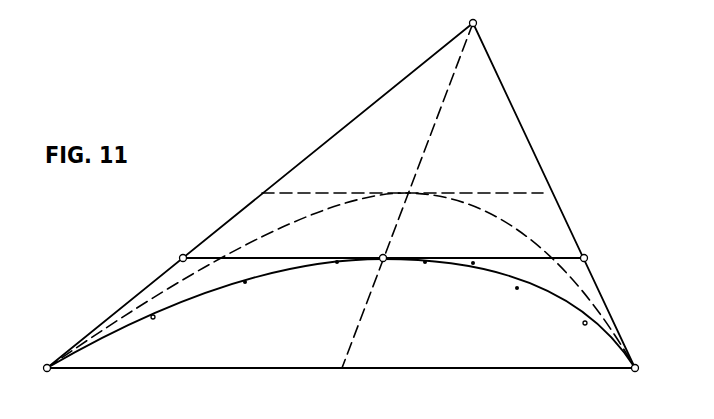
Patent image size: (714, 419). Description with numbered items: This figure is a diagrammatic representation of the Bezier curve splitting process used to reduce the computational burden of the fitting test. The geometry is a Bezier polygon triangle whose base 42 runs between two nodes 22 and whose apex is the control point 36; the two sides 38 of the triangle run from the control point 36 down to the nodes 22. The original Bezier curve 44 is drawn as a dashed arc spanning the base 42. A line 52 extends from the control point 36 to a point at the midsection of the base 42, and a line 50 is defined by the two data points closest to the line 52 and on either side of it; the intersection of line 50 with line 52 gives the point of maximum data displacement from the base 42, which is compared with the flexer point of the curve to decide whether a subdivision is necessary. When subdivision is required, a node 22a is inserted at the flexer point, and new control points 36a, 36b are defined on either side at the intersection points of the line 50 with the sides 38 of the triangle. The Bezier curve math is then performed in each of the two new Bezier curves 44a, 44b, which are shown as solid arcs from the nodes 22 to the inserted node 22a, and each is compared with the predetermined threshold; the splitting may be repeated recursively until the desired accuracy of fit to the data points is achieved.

The node 22 is at (47, 372).
The node 22a is at (386, 256).
The control point 36 is at (477, 21).
The control point 36a is at (589, 257).
The control point 36b is at (180, 255).
The sides of triangle 38 is at (346, 123).
The base of triangle 42 is at (436, 371).
The Bezier curve 44 is at (331, 208).
The Bezier curve 44a is at (482, 271).
The Bezier curve 44b is at (281, 271).
The line 50 is at (304, 255).
The line 52 is at (432, 144).